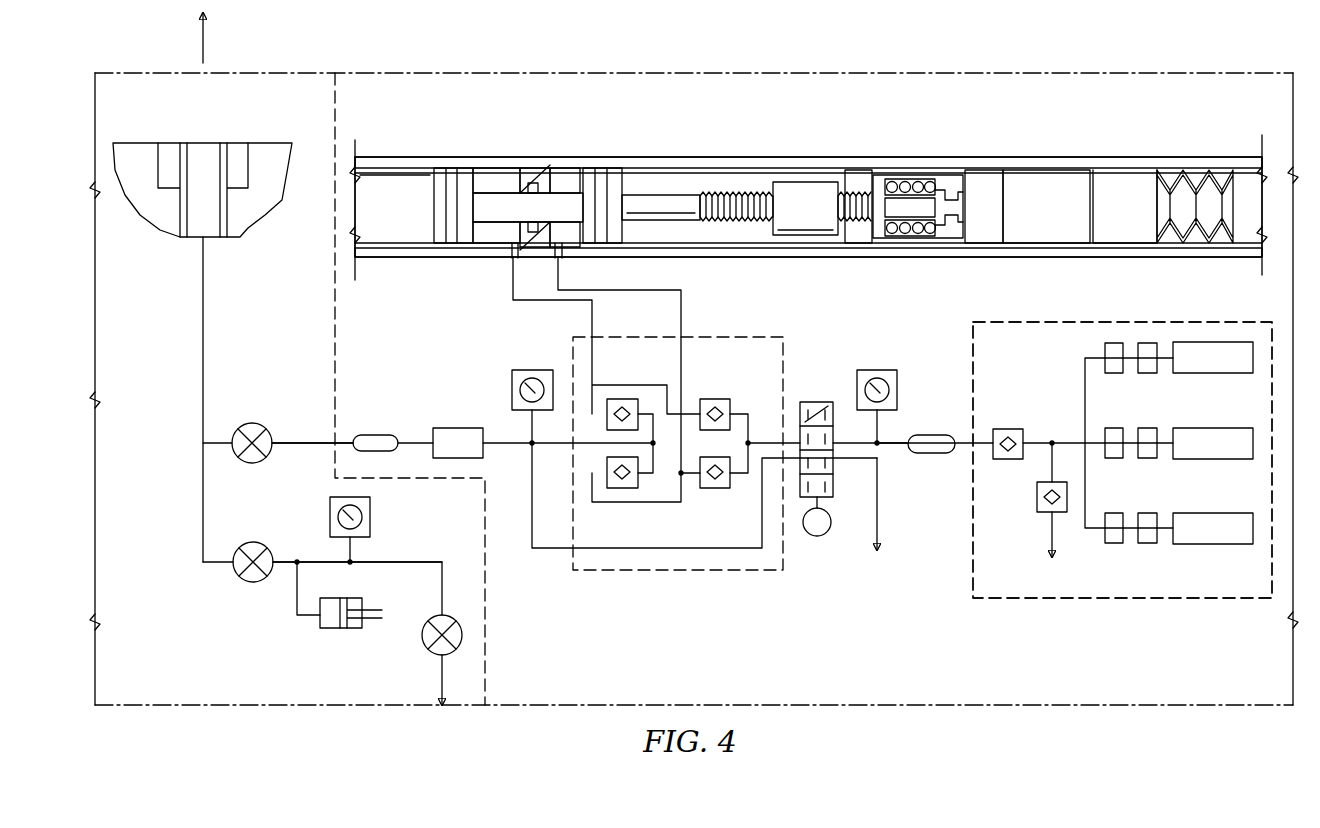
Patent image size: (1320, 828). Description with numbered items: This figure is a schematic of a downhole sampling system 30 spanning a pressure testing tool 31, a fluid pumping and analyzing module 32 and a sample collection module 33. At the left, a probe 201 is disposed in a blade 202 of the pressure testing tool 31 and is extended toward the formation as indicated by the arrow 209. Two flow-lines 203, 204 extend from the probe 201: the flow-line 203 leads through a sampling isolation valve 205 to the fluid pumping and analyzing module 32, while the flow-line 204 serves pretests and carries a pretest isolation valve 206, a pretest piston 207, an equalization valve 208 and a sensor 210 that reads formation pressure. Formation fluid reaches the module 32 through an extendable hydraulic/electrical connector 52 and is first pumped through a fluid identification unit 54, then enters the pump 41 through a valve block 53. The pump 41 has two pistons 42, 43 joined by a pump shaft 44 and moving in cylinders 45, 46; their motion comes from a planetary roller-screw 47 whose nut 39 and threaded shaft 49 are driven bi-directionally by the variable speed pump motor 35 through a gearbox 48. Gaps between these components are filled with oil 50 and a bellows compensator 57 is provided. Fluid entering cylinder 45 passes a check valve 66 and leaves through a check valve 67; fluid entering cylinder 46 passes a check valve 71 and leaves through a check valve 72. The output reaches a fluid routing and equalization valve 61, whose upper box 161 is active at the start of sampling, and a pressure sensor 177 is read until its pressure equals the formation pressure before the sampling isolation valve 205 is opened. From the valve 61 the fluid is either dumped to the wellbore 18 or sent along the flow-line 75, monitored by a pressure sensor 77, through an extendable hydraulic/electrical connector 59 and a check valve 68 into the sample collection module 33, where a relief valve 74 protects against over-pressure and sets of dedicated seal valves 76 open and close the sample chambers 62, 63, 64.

The wellbore 18 is at (882, 538).
The actuator system 30 is at (398, 72).
The pressure testing tool 31 is at (150, 328).
The fluid pumping and analyzing module 32 is at (898, 135).
The sample collection module 33 is at (1195, 600).
The pump motor 35 is at (1050, 185).
The nut 39 is at (812, 188).
The pump 41 is at (645, 183).
The piston 42 is at (440, 175).
The piston 43 is at (612, 175).
The pump shaft 44 is at (505, 195).
The cylinder 45 is at (490, 182).
The cylinder 46 is at (565, 180).
The planetary roller-screw 47 is at (757, 182).
The gearbox 48 is at (990, 185).
The threaded shaft 49 is at (728, 192).
The oil 50 is at (382, 175).
The extendable hydraulic/electrical connector 52 is at (375, 433).
The valve block 53 is at (650, 572).
The fluid identification unit 54 is at (455, 427).
The bellows compensator 57 is at (1212, 182).
The extendable hydraulic/electrical connector 59 is at (935, 434).
The fluid routing and equalization valve 61 is at (835, 485).
The sample chamber 62 is at (1210, 373).
The sample chamber 63 is at (1210, 459).
The sample chamber 64 is at (1210, 544).
The check valve 66 is at (622, 398).
The check valve 67 is at (716, 398).
The check valve 68 is at (1012, 428).
The check valve 71 is at (622, 490).
The check valve 72 is at (722, 490).
The relief valve 74 is at (1037, 498).
The flow-line 75 is at (892, 446).
The seal valves 76 is at (1120, 600).
The pressure sensor 77 is at (880, 370).
The upper box 161 is at (818, 404).
The pressure sensor 177 is at (528, 370).
The probe 201 is at (194, 165).
The blade 202 is at (140, 143).
The flow-line 203 is at (320, 440).
The flow-line 204 is at (297, 560).
The sampling isolation valve 205 is at (250, 423).
The pretest isolation valve 206 is at (253, 583).
The pretest piston 207 is at (330, 630).
The equalization valve 208 is at (422, 640).
The arrow 209 is at (203, 45).
The sensor 210 is at (372, 512).